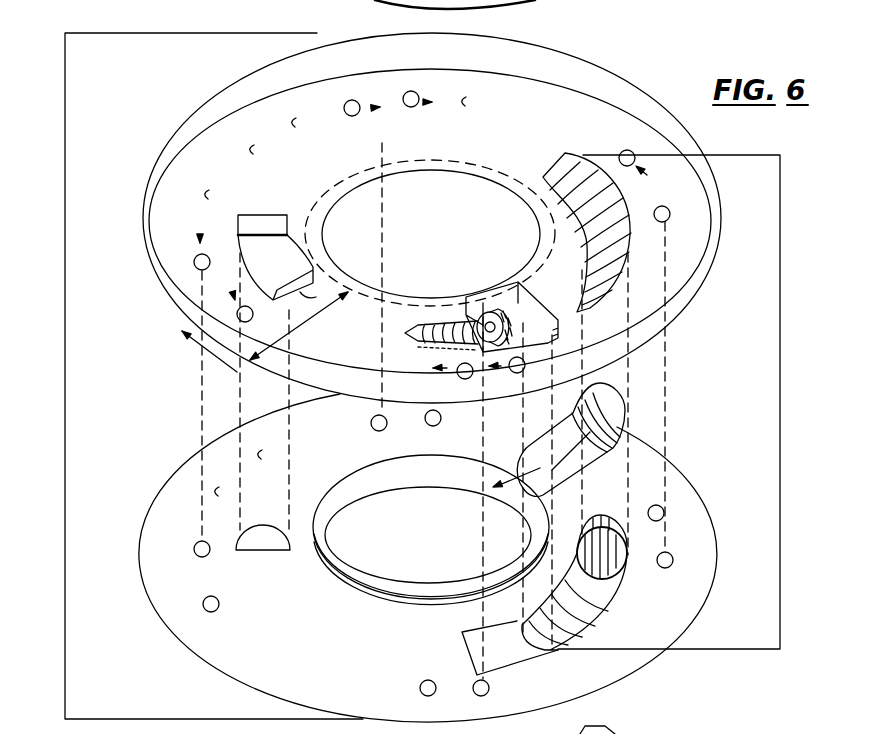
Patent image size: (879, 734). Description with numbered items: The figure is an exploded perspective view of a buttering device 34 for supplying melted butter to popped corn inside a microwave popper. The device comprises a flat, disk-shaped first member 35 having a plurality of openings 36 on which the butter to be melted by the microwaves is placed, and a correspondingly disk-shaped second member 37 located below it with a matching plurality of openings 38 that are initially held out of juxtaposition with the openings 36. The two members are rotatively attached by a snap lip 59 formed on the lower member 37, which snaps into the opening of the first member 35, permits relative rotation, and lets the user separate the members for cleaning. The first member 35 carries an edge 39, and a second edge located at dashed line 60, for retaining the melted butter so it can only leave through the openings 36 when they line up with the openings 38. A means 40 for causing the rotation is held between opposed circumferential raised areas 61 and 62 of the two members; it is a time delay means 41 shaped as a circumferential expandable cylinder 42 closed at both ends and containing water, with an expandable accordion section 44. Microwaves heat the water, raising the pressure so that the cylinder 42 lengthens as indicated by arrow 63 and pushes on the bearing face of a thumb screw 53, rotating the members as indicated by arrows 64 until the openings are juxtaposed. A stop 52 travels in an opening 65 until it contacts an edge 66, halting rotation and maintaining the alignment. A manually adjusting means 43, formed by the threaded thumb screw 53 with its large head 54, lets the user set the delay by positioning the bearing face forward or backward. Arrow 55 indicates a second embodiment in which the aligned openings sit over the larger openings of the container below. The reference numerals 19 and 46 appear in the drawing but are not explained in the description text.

The adjacent figure element (partial) 19 is at (628, 3).
The buttering device 34 is at (65, 263).
The first member 35 is at (405, 218).
The openings 36 is at (406, 92).
The second member 37 is at (128, 522).
The openings 38 is at (203, 602).
The edge 39 is at (583, 73).
The means for causing rotation 40 is at (797, 400).
The time delay means 41 is at (588, 440).
The expandable cylinder 42 is at (563, 468).
The manually adjusting means 43 is at (450, 324).
The expandable accordion section 44 is at (635, 440).
The lower element (partial) 46 is at (613, 730).
The stop 52 is at (258, 545).
The thumb screw 53 is at (483, 292).
The head 54 is at (498, 306).
The arrow 55 is at (314, 320).
The snap lip 59 is at (370, 600).
The dashed line 60 is at (467, 163).
The circumferential raised area 61 is at (563, 156).
The circumferential raised area 62 is at (600, 600).
The arrow 63 is at (428, 541).
The arrows 64 is at (423, 106).
The opening 65 is at (258, 240).
The edge 66 is at (312, 301).